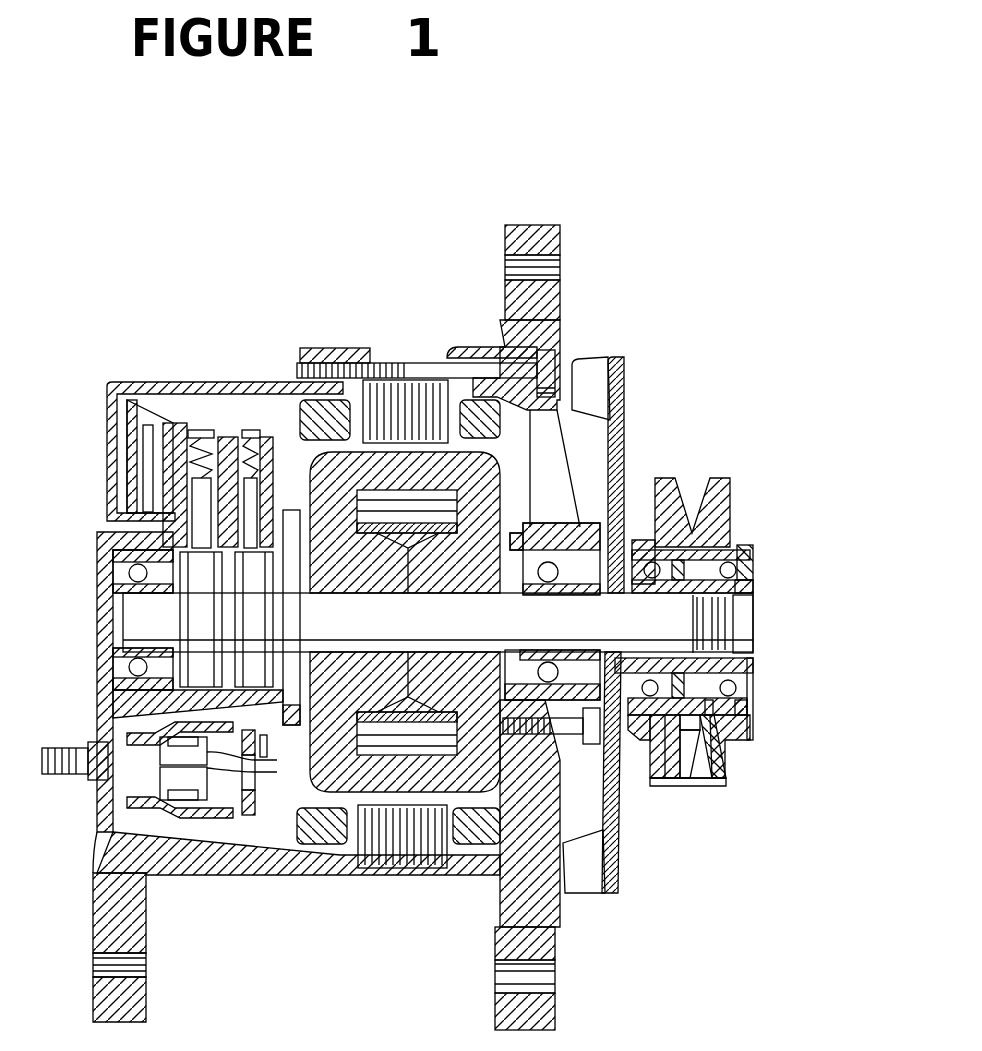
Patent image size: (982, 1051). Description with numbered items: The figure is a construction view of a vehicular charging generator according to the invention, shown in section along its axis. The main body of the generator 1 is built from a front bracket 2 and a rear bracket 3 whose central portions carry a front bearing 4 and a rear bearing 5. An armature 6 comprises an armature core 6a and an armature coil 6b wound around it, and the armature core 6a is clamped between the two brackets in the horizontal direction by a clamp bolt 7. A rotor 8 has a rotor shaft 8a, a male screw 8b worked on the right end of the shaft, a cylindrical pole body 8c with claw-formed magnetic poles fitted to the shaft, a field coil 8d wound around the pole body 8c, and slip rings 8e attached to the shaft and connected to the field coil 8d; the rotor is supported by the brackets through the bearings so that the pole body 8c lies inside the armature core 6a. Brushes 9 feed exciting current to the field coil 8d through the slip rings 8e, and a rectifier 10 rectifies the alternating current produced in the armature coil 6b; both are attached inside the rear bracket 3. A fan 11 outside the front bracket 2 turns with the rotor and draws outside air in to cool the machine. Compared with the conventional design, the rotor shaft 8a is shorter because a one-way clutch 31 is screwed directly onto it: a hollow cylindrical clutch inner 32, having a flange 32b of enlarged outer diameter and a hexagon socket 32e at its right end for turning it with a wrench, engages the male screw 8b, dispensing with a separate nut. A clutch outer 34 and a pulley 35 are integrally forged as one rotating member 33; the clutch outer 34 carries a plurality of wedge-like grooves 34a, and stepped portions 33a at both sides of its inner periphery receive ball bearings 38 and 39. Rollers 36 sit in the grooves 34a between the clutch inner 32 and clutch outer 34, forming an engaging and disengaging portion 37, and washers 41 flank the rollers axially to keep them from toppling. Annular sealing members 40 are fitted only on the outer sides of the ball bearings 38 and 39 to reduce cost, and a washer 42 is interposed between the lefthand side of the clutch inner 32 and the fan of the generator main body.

The main body of a generator 1 is at (150, 382).
The front bracket 2 is at (497, 935).
The rear bracket 3 is at (148, 930).
The front bearing 4 is at (500, 760).
The rear bearing 5 is at (130, 555).
The armature 6 is at (380, 380).
The armature core 6a is at (410, 382).
The armature coil 6b is at (300, 418).
The clamp bolt 7 is at (440, 364).
The rotor 8 is at (305, 720).
The rotor shaft 8a is at (606, 425).
The male screw 8b is at (752, 652).
The cylindrical pole body 8c is at (370, 745).
The field coil 8d is at (410, 735).
The slip rings 8e is at (240, 690).
The brushes 9 is at (200, 436).
The rectifier 10 is at (120, 798).
The fan 11 is at (580, 893).
The one-way clutch 31 is at (715, 490).
The clutch inner 32 is at (752, 620).
The flange 32b is at (752, 590).
The hexagon socket 32e is at (752, 688).
The rotating member 33 is at (735, 520).
The stepped portions 33a is at (748, 570).
The clutch outer 34 is at (728, 530).
The wedge-like grooves 34a is at (745, 558).
The pulley 35 is at (655, 540).
The rollers 36 is at (684, 735).
The engaging and disengaging portion 37 is at (713, 767).
The ball bearing 38 is at (637, 740).
The ball bearing 39 is at (728, 748).
The annular sealing members 40 is at (522, 735).
The washers 41 is at (715, 740).
The washer 42 is at (630, 540).